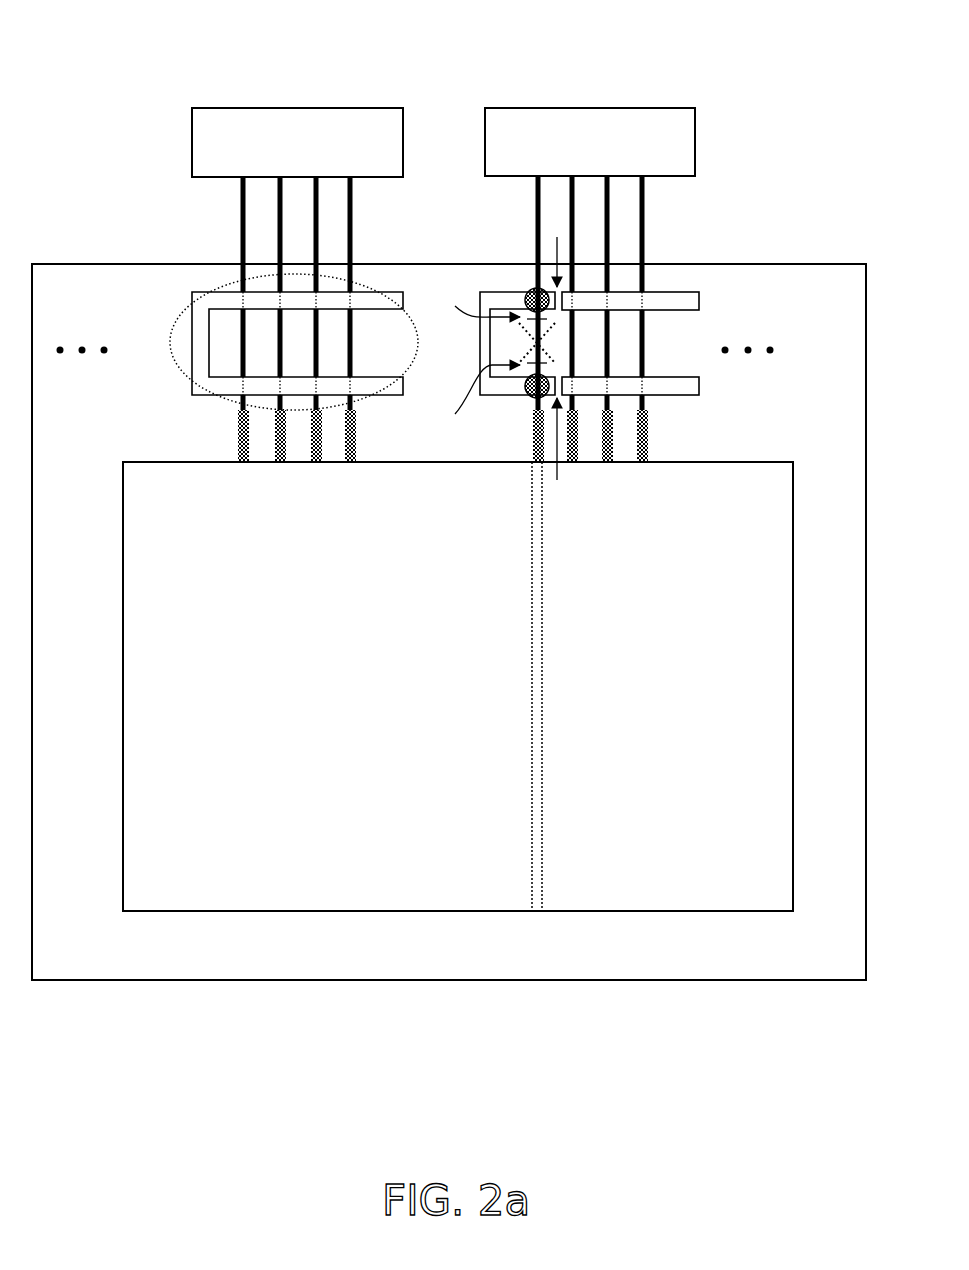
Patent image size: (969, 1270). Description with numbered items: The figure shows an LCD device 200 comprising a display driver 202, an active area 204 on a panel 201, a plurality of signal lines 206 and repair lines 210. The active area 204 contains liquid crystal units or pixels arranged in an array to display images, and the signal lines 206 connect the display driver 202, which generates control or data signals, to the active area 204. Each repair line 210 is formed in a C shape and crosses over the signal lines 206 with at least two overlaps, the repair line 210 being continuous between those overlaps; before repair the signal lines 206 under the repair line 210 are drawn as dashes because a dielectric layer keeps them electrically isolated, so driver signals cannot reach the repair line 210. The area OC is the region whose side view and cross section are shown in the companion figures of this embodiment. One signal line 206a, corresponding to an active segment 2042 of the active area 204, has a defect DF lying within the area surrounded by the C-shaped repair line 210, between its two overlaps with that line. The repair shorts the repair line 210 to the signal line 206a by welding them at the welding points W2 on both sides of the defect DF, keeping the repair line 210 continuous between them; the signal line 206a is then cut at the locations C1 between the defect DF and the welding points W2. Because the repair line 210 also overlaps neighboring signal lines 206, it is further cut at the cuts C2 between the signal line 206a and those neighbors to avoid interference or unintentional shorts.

The LCD device 200 is at (92, 48).
The panel 201 is at (762, 264).
The display driver 202 is at (336, 108).
The active area 204 is at (712, 625).
The active segment 2042 is at (542, 712).
The signal lines 206 is at (354, 205).
The signal line 206a is at (535, 232).
The repair line 210 is at (390, 396).
The area OC is at (182, 373).
The welding points W2 is at (526, 290).
The cut locations C1 is at (488, 358).
The cuts C2 is at (559, 359).
The defect DF is at (530, 336).